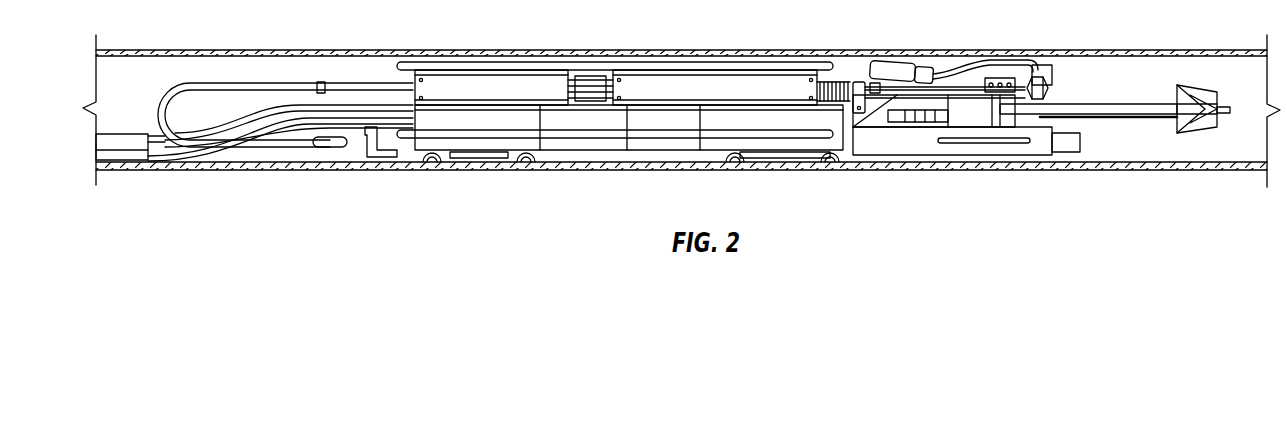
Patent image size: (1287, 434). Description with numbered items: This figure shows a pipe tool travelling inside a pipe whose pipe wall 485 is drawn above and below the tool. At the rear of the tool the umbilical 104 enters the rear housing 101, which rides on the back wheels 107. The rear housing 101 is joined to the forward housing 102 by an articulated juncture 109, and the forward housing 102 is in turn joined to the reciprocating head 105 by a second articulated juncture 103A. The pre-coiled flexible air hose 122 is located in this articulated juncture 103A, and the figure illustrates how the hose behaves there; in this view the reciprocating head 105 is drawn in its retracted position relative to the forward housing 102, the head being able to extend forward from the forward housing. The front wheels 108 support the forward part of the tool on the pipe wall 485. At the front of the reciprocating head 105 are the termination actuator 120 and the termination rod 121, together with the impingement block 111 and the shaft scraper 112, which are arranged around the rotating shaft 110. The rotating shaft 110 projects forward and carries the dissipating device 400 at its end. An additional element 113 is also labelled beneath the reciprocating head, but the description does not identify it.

The rear housing 101 is at (512, 115).
The forward housing 102 is at (705, 88).
The articulated juncture 103A is at (832, 82).
The umbilical 104 is at (116, 150).
The reciprocating head 105 is at (920, 108).
The back wheels 107 is at (472, 155).
The front wheels 108 is at (795, 155).
The articulated juncture 109 is at (592, 78).
The rotating shaft 110 is at (1137, 103).
The impingement block 111 is at (1050, 85).
The shaft scraper 112 is at (1127, 120).
The frame 113 is at (897, 140).
The termination actuator 120 is at (890, 63).
The termination rod 121 is at (952, 72).
The pre-coiled flexible air hose 122 is at (831, 112).
The dissipating device 400 is at (1203, 132).
The pipe wall 485 is at (1030, 170).